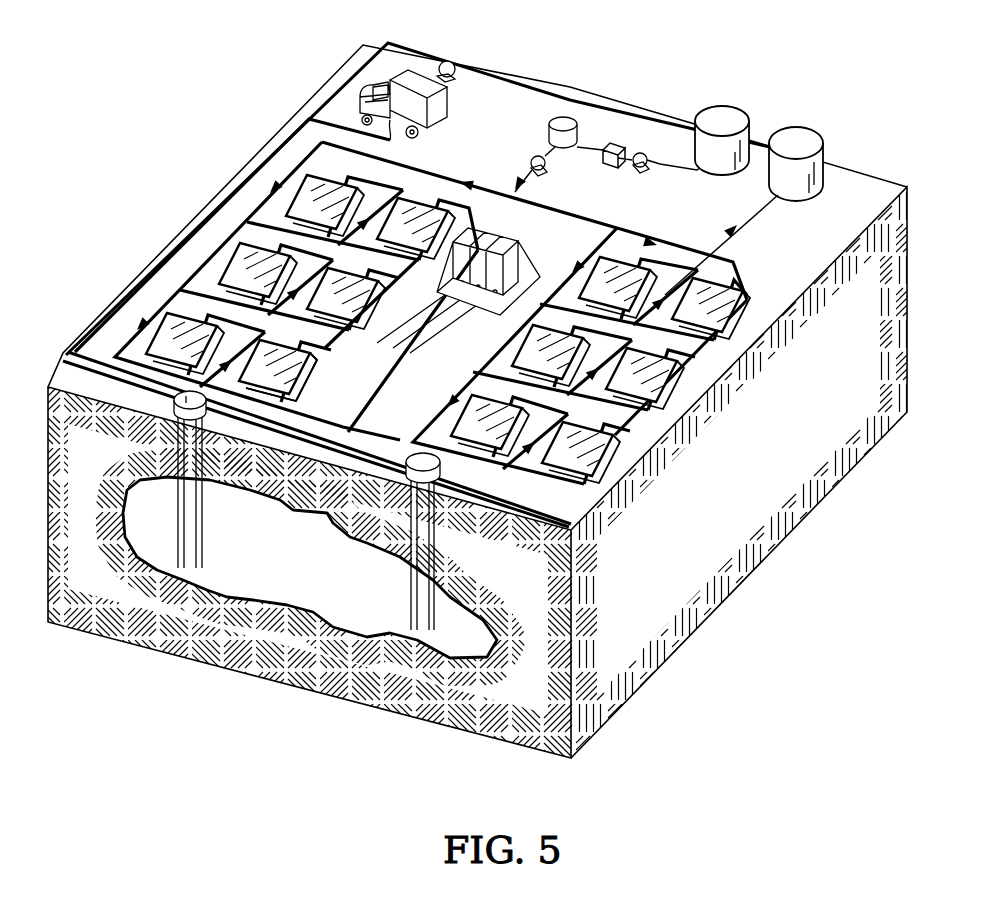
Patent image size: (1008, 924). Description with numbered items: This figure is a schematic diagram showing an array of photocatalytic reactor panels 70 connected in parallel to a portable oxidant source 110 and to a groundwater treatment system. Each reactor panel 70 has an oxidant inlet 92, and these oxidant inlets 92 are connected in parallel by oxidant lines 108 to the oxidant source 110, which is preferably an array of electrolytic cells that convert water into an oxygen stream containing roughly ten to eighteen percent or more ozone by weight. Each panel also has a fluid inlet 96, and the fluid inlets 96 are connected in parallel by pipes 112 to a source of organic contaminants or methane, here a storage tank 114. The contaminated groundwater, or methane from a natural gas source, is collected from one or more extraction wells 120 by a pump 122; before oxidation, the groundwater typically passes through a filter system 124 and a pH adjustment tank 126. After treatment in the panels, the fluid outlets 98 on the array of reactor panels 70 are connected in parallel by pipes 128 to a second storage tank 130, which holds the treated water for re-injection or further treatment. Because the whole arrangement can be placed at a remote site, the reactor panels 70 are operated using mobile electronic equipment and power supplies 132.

The photocatalytic reactor panel 70 is at (310, 373).
The oxidant inlet 92 is at (290, 395).
The fluid inlet 96 is at (285, 420).
The fluid outlet 98 is at (368, 330).
The oxidant line 108 is at (382, 385).
The oxidant source 110 is at (522, 252).
The pipe 112 is at (425, 420).
The storage tank 114 is at (726, 107).
The extraction well 120 is at (205, 408).
The pump 122 is at (455, 61).
The filter system 124 is at (605, 170).
The pH adjustment tank 126 is at (568, 115).
The pipe 128 is at (430, 175).
The storage tank 130 is at (800, 128).
The mobile electronic equipment and power supplies 132 is at (448, 95).